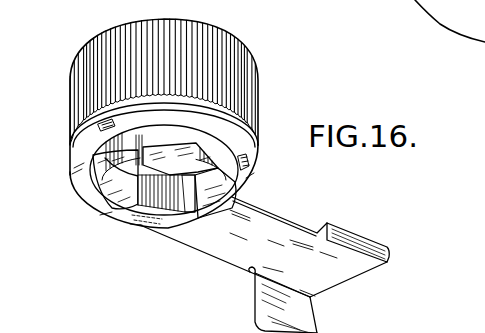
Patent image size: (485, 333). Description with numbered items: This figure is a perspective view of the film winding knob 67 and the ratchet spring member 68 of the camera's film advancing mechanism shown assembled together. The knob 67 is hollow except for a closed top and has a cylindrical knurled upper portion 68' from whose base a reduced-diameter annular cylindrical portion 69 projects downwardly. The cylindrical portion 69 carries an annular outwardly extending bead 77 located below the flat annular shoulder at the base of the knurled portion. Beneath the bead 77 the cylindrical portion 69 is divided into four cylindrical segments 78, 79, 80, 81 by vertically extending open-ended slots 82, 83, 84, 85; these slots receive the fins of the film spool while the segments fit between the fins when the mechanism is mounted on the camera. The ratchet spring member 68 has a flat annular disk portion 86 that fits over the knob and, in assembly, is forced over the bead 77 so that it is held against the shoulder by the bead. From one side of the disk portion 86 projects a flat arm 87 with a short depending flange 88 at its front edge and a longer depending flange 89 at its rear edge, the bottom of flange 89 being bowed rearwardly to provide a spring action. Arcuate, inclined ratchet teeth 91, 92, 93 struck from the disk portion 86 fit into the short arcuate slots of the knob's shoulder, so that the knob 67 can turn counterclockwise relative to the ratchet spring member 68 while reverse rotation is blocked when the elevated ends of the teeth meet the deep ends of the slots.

The winding knob 67 is at (68, 67).
The ratchet spring member 68 is at (182, 254).
The cylindrical knurled upper portion 68' is at (281, 73).
The annular cylindrical portion 69 is at (100, 201).
The bead 77 is at (218, 140).
The cylindrical segment 78 is at (92, 153).
The cylindrical segment 79 is at (175, 134).
The cylindrical segment 80 is at (223, 193).
The cylindrical segment 81 is at (160, 218).
The open-ended slot 82 is at (135, 148).
The open-ended slot 83 is at (226, 160).
The open-ended slot 84 is at (197, 220).
The open-ended slot 85 is at (115, 211).
The annular disk portion 86 is at (76, 172).
The flat arm 87 is at (334, 278).
The short depending flange 88 is at (358, 240).
The long depending flange 89 is at (262, 307).
The ratchet tooth 91 is at (134, 222).
The ratchet tooth 92 is at (98, 125).
The ratchet tooth 93 is at (250, 170).